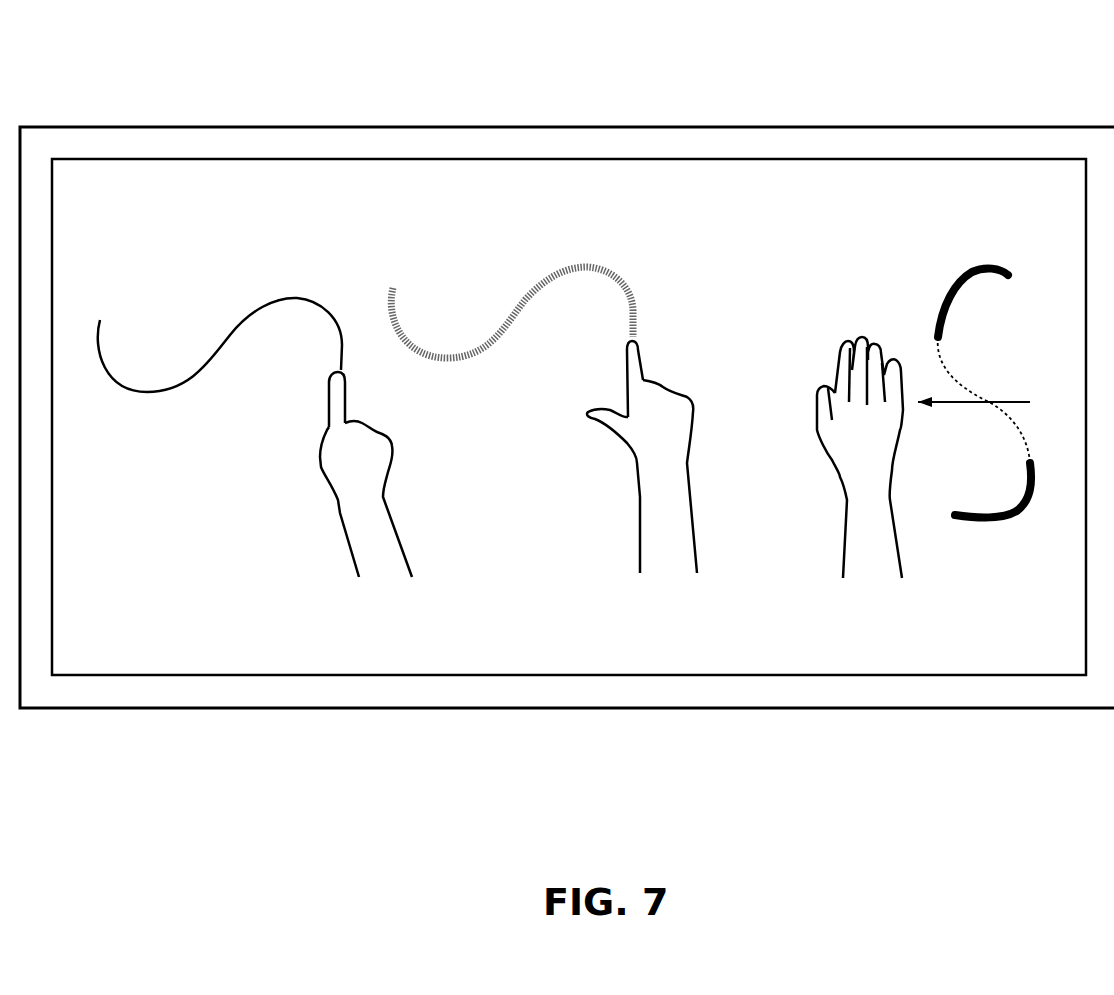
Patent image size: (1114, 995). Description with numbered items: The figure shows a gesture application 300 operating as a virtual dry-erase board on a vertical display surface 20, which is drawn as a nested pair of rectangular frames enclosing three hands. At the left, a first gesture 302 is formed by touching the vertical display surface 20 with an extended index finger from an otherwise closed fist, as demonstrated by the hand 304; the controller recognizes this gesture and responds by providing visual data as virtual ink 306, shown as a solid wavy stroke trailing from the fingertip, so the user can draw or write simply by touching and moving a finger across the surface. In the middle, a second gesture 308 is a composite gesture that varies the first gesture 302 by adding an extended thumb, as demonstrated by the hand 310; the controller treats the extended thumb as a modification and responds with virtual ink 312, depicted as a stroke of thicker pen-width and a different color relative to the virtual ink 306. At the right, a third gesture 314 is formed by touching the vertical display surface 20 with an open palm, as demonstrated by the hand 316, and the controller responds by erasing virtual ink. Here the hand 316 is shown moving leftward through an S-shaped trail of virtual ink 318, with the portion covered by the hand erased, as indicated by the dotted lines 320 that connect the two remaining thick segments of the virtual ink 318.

The gesture application 300 is at (100, 62).
The vertical display surface 20 is at (828, 125).
The first gesture 302 is at (262, 515).
The hand 304 is at (312, 427).
The virtual ink 306 is at (253, 313).
The second gesture 308 is at (578, 513).
The hand 310 is at (682, 378).
The virtual ink 312 is at (587, 265).
The third gesture 314 is at (955, 547).
The hand 316 is at (845, 330).
The virtual ink 318 is at (983, 272).
The dotted lines 320 is at (952, 375).